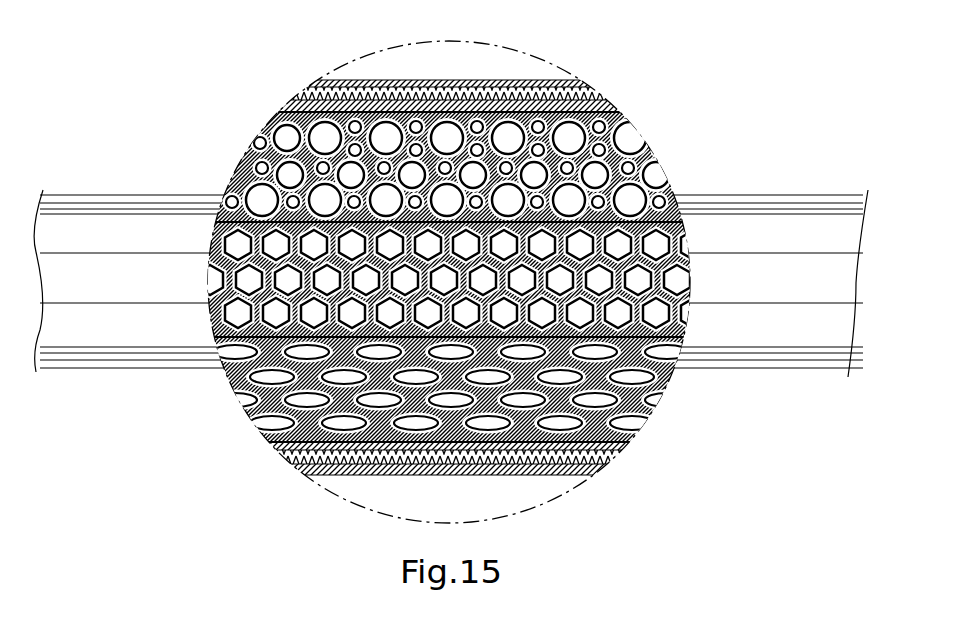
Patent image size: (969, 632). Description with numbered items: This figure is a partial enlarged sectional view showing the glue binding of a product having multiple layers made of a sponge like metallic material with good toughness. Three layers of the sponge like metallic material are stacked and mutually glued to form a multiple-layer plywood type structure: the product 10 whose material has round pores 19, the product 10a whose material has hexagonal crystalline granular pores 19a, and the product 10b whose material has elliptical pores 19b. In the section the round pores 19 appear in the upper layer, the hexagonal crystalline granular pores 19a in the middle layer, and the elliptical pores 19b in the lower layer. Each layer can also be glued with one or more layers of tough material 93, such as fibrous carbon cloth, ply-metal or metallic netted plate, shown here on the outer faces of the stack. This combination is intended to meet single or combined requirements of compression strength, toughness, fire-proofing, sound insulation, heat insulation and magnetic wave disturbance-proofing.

The tough material 93 is at (289, 96).
The product of sponge like metallic material with round pores 10 is at (666, 149).
The round pores 19 is at (635, 200).
The product of sponge like metallic material with hexagonal crystalline granular por 10a is at (201, 262).
The hexagonal crystalline granular pores 19a is at (232, 243).
The product of sponge like metallic material with elliptical pores 10b is at (678, 391).
The elliptical pores 19b is at (268, 377).